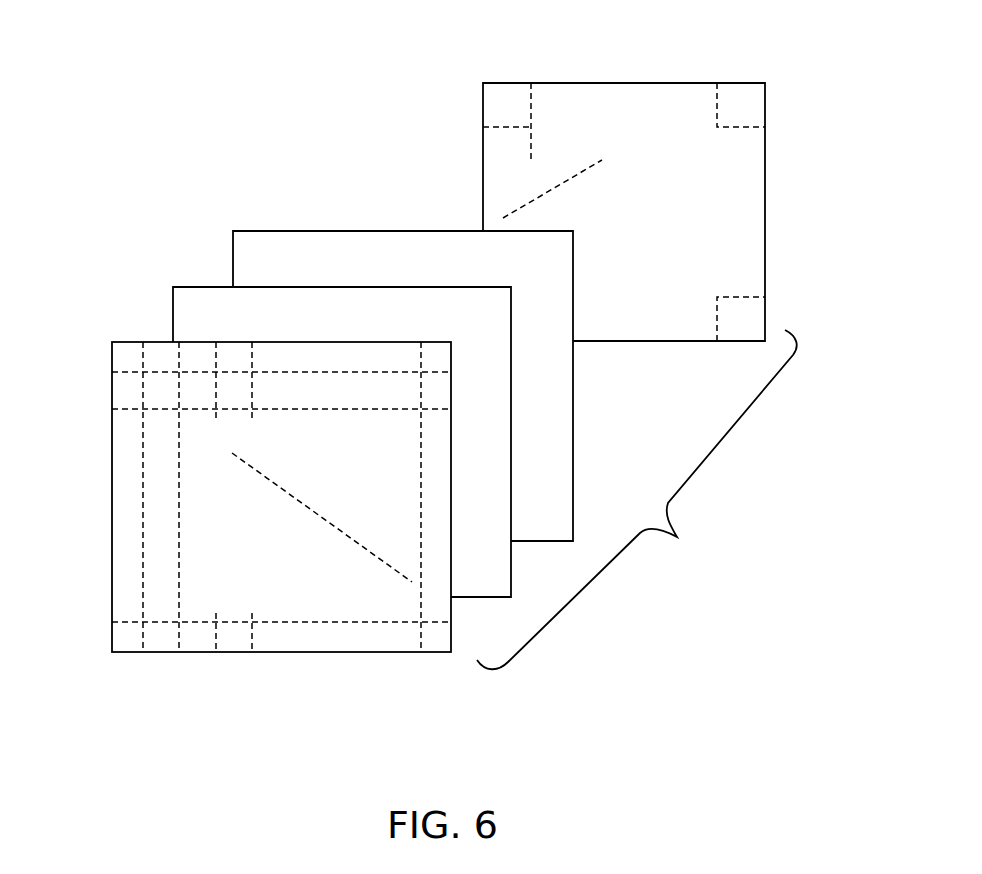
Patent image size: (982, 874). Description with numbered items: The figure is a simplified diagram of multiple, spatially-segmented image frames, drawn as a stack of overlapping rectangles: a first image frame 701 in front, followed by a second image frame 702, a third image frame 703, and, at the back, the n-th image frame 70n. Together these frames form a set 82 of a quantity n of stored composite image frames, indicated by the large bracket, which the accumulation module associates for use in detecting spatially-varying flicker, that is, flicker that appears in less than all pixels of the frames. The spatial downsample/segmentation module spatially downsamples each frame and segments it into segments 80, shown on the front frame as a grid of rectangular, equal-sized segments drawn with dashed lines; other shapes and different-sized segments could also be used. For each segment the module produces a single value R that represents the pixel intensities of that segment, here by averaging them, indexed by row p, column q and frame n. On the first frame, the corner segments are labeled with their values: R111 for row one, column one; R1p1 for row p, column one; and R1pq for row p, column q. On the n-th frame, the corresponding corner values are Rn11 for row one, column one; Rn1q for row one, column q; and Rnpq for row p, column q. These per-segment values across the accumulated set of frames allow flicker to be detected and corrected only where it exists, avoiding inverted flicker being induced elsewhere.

The image frame 701 is at (112, 528).
The image frame 702 is at (200, 287).
The image frame 703 is at (298, 231).
The image frame 70n is at (765, 200).
The segments 80 is at (237, 640).
The set of frames 82 is at (637, 499).
The segment value R111 is at (130, 355).
The segment value R1p1 is at (124, 640).
The segment value R1pq is at (432, 640).
The segment value Rn11 is at (513, 97).
The segment value Rn1q is at (748, 97).
The segment value Rnpq is at (750, 330).